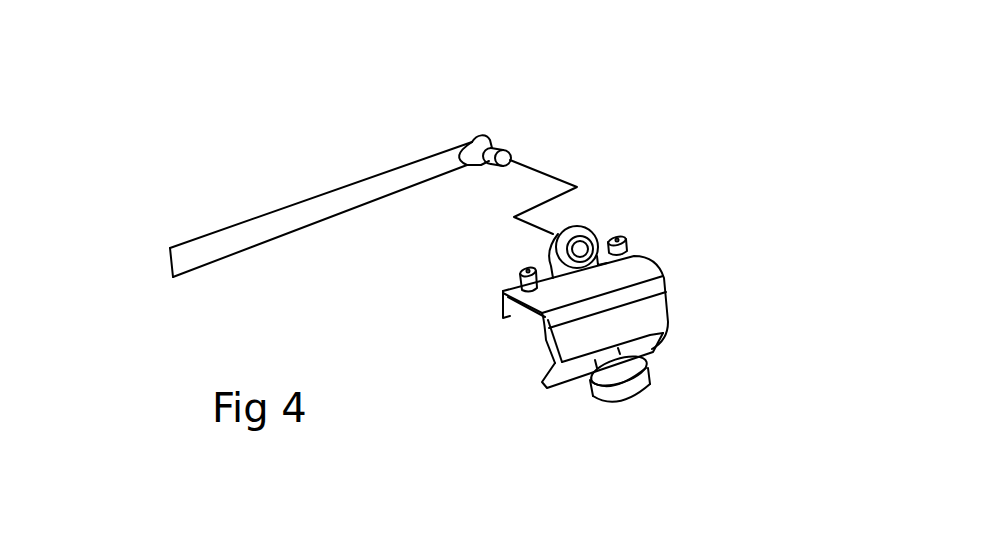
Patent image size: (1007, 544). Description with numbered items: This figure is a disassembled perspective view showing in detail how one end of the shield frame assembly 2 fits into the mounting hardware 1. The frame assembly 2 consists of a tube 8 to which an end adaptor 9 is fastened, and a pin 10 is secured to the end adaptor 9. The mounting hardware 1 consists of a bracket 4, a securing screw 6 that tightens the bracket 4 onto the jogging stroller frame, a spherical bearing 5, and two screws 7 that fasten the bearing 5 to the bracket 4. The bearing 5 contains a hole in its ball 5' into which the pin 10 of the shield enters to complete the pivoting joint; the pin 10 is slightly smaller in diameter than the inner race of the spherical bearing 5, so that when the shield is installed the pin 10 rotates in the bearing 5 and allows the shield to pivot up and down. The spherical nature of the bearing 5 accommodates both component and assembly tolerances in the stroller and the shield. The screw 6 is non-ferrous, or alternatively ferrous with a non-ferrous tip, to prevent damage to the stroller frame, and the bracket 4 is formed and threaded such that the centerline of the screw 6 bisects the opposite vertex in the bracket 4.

The mounting hardware 1 is at (726, 242).
The frame assembly 2 is at (295, 117).
The bracket 4 is at (670, 298).
The spherical bearing 5 is at (524, 241).
The ball 5' is at (494, 321).
The securing screw 6 is at (600, 398).
The screws 7 is at (619, 239).
The tube 8 is at (432, 154).
The end adaptor 9 is at (476, 138).
The pin 10 is at (511, 152).